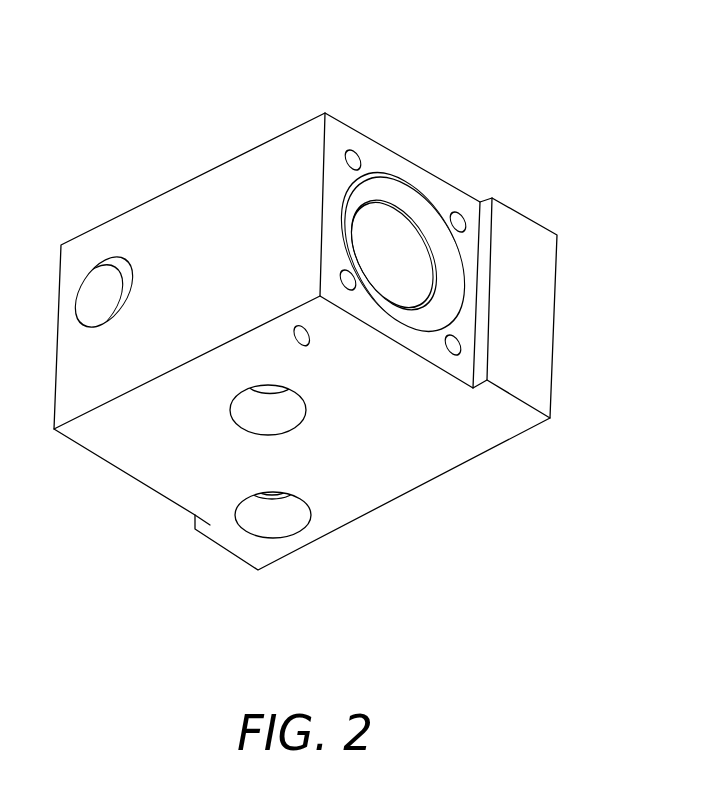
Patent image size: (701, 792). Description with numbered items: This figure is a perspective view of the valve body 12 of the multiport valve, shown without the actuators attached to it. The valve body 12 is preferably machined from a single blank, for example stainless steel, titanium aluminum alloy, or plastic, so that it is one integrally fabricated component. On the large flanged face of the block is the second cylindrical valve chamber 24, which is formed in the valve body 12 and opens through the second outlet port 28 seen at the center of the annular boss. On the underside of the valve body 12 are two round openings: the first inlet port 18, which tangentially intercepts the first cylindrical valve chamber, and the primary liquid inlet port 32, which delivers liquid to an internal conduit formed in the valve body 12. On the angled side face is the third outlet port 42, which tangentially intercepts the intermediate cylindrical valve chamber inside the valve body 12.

The valve body 12 is at (197, 112).
The first inlet port 18 is at (312, 522).
The second cylindrical valve chamber 24 is at (398, 223).
The second outlet port 28 is at (363, 208).
The primary liquid inlet port 32 is at (298, 393).
The third outlet port 42 is at (127, 258).